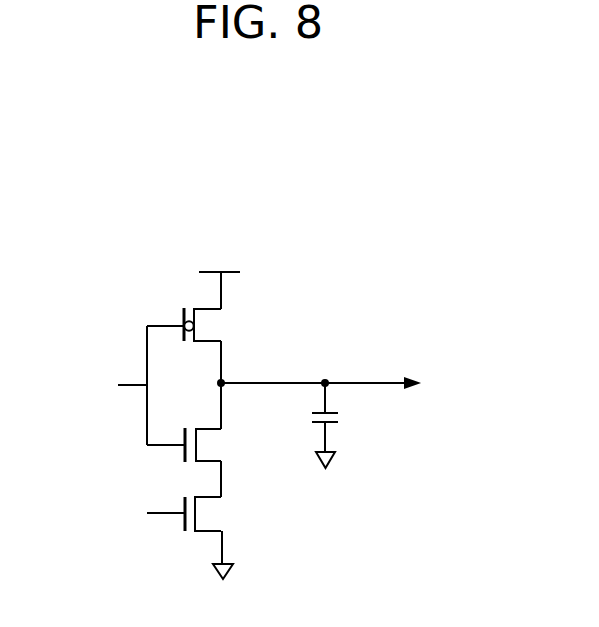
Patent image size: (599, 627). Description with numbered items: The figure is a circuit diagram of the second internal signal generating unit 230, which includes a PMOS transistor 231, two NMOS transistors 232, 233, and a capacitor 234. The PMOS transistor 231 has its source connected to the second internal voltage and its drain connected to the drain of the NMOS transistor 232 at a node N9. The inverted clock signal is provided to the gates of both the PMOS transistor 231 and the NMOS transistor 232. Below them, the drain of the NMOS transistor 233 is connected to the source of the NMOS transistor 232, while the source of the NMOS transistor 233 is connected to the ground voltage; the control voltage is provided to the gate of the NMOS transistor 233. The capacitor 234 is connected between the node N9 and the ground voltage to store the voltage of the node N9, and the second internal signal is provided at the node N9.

The second internal signal generating unit 230 is at (259, 192).
The PMOS transistor 231 is at (210, 328).
The NMOS transistor 232 is at (210, 446).
The NMOS transistor 233 is at (212, 514).
The capacitor 234 is at (340, 419).
The node N9 is at (325, 382).